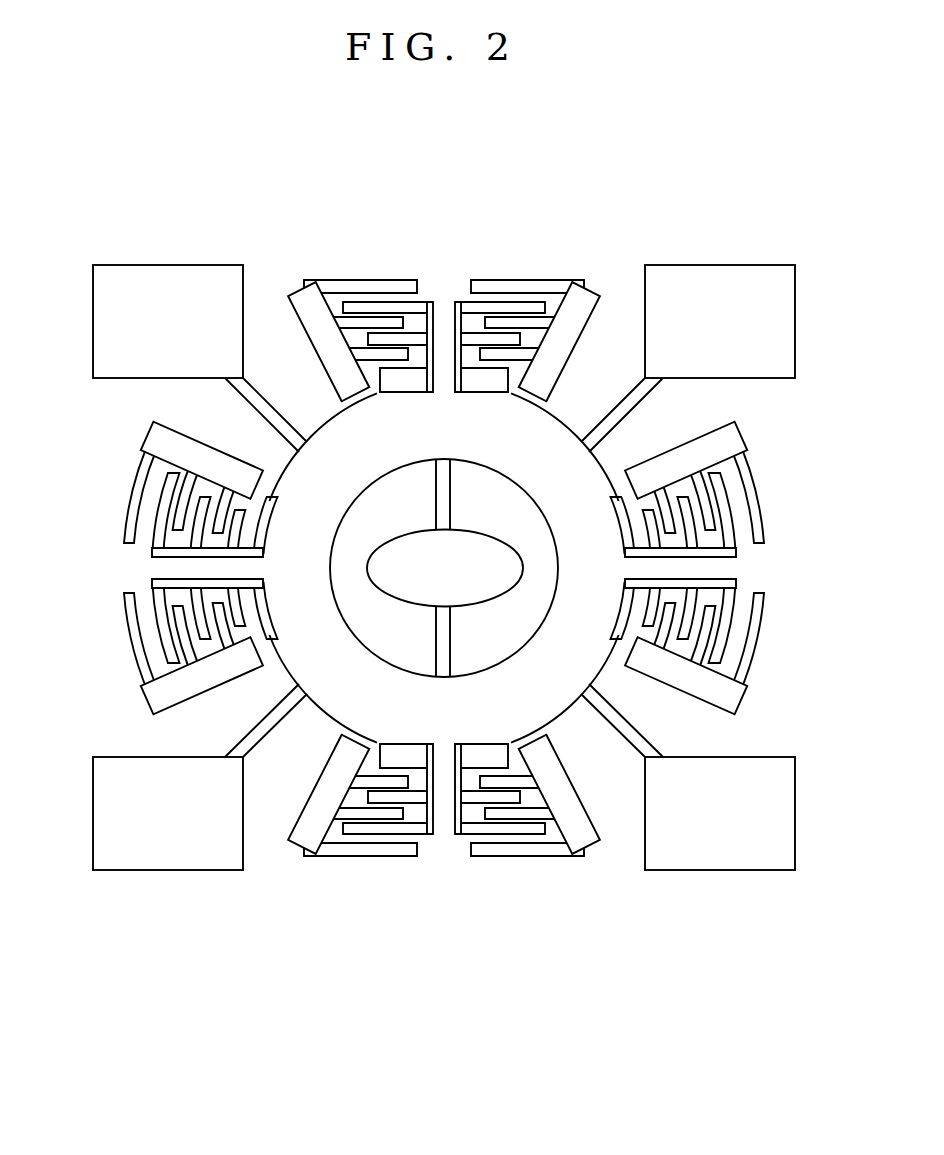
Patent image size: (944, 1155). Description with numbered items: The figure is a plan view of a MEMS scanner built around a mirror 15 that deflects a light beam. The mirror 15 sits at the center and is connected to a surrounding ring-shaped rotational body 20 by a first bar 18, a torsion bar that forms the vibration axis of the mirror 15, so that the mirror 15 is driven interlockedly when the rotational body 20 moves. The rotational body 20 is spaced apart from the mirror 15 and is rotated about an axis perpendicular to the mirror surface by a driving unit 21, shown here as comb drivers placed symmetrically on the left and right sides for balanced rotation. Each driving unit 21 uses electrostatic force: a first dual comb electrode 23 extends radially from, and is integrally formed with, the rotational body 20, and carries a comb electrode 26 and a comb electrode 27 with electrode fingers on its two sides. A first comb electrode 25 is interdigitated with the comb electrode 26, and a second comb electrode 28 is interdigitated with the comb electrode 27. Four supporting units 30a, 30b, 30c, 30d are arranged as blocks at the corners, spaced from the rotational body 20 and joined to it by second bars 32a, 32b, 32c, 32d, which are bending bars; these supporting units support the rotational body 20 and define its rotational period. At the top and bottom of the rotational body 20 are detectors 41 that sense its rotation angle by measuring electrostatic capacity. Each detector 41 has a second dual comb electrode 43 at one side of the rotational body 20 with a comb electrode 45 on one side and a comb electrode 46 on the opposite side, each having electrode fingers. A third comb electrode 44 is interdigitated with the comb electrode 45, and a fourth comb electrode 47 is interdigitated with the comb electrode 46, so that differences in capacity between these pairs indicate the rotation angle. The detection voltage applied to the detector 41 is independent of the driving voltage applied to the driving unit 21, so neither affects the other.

The mirror 15 is at (483, 540).
The first bar 18 is at (440, 506).
The rotational body 20 is at (383, 670).
The driving unit 21 is at (445, 568).
The first dual comb electrode 23 is at (158, 566).
The first comb electrode 25 is at (148, 467).
The comb electrode 26 is at (150, 505).
The comb electrode 27 is at (148, 618).
The second comb electrode 28 is at (162, 665).
The supporting unit 30a is at (716, 265).
The supporting unit 30b is at (165, 265).
The supporting unit 30c is at (165, 870).
The supporting unit 30d is at (716, 870).
The second bar 32a is at (628, 393).
The second bar 32b is at (263, 395).
The second bar 32c is at (250, 742).
The second bar 32d is at (622, 735).
The detector 41 is at (444, 570).
The second dual comb electrode 43 is at (443, 300).
The third comb electrode 44 is at (527, 305).
The comb electrode 45 is at (483, 293).
The comb electrode 46 is at (383, 293).
The fourth comb electrode 47 is at (340, 283).